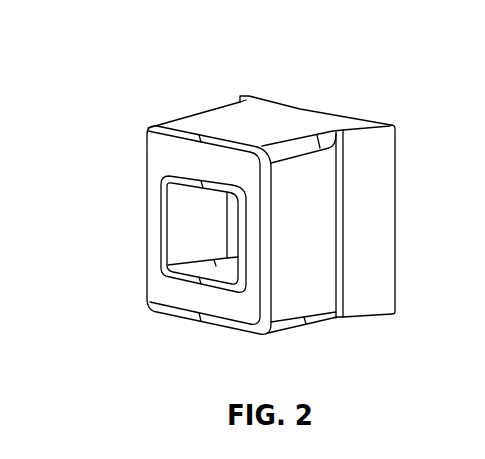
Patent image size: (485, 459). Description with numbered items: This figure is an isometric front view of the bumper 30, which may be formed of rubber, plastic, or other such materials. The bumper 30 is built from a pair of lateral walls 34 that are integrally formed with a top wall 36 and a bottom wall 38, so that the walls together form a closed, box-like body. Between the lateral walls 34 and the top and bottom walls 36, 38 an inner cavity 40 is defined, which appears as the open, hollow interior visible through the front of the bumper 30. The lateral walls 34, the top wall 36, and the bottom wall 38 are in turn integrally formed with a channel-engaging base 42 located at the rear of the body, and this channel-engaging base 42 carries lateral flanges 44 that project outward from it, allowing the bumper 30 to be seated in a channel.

The bumper 30 is at (128, 38).
The lateral walls 34 is at (145, 267).
The top wall 36 is at (230, 117).
The bottom wall 38 is at (198, 322).
The inner cavity 40 is at (181, 212).
The channel-engaging base 42 is at (322, 107).
The lateral flanges 44 is at (385, 163).